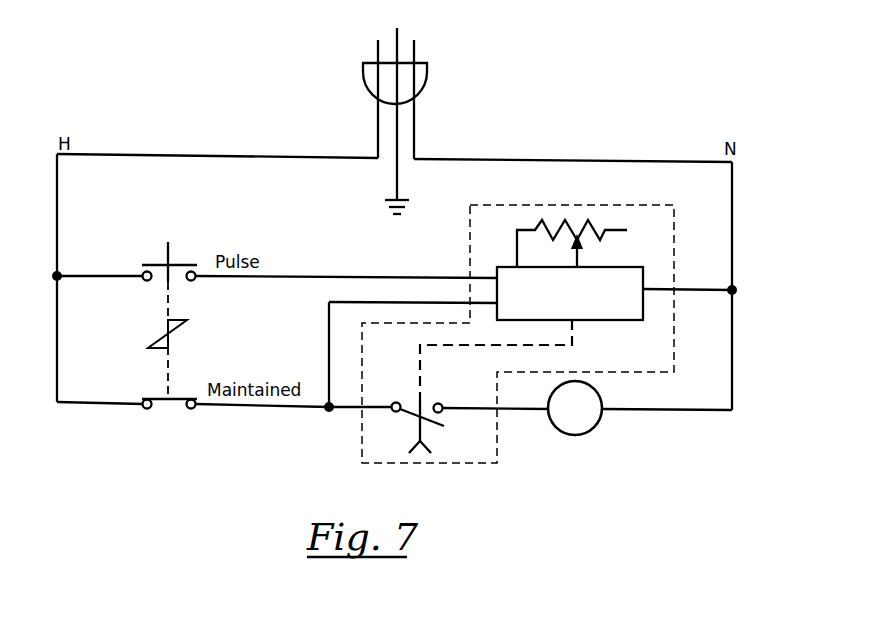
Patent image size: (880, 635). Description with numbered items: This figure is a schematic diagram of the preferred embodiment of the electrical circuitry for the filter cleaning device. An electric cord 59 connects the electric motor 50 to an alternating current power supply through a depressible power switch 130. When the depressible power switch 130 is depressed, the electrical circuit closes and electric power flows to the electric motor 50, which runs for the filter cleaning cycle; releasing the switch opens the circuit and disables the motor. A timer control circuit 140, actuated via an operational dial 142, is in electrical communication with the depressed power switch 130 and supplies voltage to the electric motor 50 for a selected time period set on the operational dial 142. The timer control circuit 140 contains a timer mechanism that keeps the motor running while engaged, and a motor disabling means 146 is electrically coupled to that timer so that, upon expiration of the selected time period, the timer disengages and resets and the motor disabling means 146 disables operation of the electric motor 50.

The electric cord 59 is at (428, 83).
The depressible power switch 130 is at (155, 262).
The timer control circuit 140 is at (676, 318).
The operational dial 142 is at (593, 225).
The motor disabling means 146 is at (610, 267).
The electric motor 50 is at (598, 425).